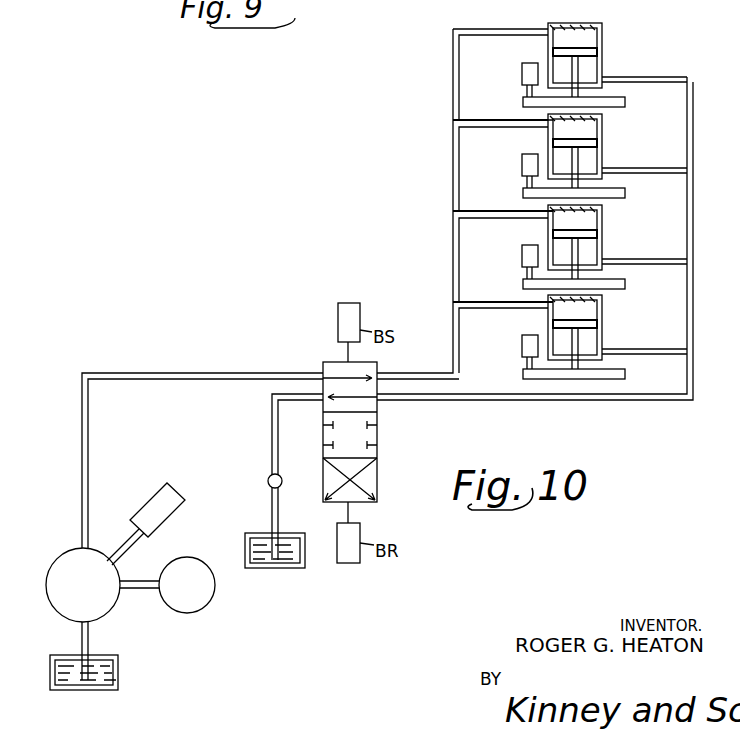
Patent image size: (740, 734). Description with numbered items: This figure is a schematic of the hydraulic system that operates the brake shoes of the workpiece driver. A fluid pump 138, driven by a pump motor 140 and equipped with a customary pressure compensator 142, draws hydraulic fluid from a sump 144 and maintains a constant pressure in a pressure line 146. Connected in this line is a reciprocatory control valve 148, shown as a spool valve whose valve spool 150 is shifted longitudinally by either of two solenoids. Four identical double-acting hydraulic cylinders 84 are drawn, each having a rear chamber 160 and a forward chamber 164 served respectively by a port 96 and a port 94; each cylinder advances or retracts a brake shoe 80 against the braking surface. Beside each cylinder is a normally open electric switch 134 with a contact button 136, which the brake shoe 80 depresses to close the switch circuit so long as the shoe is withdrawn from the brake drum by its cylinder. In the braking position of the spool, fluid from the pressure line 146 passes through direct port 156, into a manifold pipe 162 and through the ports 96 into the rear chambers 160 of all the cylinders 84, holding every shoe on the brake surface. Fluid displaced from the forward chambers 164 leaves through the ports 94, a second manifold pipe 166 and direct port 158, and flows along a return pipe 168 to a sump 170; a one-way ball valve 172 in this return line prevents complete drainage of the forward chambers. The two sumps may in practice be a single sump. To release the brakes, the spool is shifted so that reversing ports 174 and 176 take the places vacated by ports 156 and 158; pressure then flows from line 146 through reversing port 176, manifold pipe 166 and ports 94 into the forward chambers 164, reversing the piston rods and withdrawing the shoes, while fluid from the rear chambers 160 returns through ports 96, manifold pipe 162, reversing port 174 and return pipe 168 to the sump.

The brake shoe 80 is at (622, 102).
The double-acting hydraulic cylinder 84 is at (602, 115).
The port 94 is at (692, 77).
The port 96 is at (506, 118).
The electric switch 134 is at (522, 65).
The contact button 136 is at (526, 90).
The fluid pump 138 is at (66, 560).
The pump motor 140 is at (214, 588).
The pressure compensator 142 is at (148, 503).
The sump 144 is at (120, 680).
The pressure line 146 is at (219, 371).
The reciprocatory control valve 148 is at (313, 361).
The valve spool 150 is at (337, 360).
The direct port 156 is at (372, 370).
The direct port 158 is at (372, 400).
The rear chamber 160 is at (568, 130).
The manifold pipe 162 is at (450, 335).
The forward chamber 164 is at (589, 68).
The second manifold pipe 166 is at (506, 392).
The return pipe 168 is at (272, 413).
The sump 170 is at (245, 550).
The one-way ball valve 172 is at (268, 481).
The reversing port 174 is at (378, 463).
The reversing port 176 is at (322, 480).